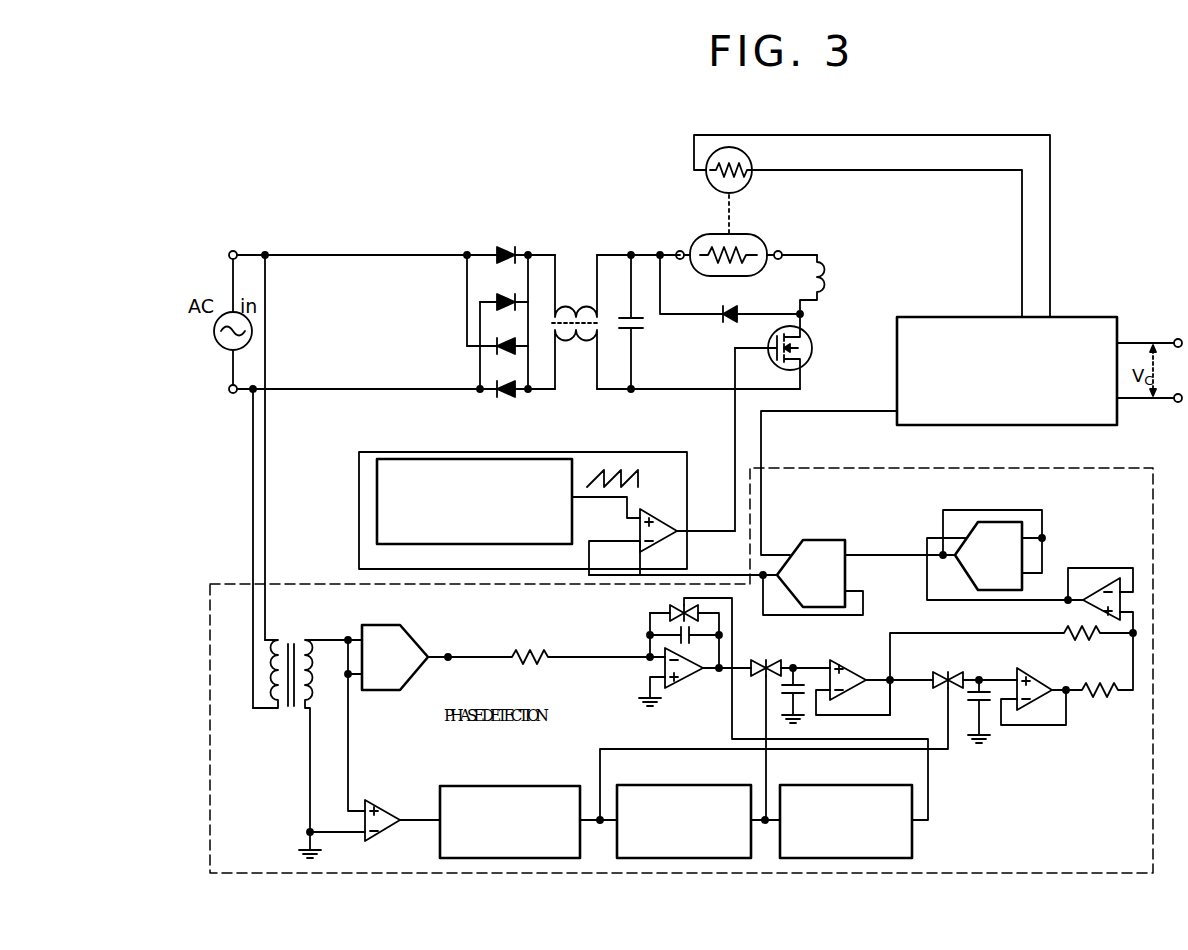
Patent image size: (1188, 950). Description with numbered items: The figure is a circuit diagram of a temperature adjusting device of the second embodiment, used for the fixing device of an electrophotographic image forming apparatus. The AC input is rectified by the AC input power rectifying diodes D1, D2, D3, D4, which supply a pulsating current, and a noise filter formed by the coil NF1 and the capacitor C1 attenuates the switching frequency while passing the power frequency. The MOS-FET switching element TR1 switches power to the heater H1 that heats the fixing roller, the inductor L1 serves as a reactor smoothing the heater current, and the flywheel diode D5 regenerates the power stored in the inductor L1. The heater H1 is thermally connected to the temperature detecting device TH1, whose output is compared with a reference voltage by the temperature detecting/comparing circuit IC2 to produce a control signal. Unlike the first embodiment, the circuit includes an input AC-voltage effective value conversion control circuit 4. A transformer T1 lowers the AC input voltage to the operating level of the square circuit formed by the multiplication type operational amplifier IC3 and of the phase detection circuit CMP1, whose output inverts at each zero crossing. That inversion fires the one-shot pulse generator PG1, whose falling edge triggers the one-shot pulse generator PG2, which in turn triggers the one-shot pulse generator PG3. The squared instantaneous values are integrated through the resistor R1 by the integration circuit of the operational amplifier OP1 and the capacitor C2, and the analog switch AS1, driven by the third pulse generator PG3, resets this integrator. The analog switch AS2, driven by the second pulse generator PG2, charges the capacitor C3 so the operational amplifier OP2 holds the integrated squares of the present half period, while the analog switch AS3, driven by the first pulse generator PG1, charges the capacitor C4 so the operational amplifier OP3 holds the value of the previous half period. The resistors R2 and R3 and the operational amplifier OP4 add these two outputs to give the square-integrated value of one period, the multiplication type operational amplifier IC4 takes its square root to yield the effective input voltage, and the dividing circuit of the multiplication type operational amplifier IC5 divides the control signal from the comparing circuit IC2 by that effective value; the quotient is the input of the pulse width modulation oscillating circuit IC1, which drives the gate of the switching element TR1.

The AC input power rectifying diode D1 is at (501, 247).
The AC input power rectifying diode D2 is at (504, 302).
The AC input power rectifying diode D3 is at (497, 346).
The AC input power rectifying diode D4 is at (504, 389).
The coil NF1 is at (575, 300).
The capacitor C1 is at (641, 334).
The heater H1 is at (757, 238).
The temperature detecting device TH1 is at (741, 148).
The inductor L1 is at (825, 281).
The flywheel diode D5 is at (742, 316).
The MOS-FET switching element TR1 is at (810, 348).
The temperature detecting/comparing circuit IC2 is at (1079, 317).
The PWM oscillating circuit IC1 is at (359, 463).
The input AC-voltage effective value conversion control circuit 4 is at (772, 472).
The multiplication type operational amplifier (dividing circuit) IC5 is at (786, 540).
The multiplication type operational amplifier (square root circuit) IC4 is at (974, 528).
The operational amplifier OP4 is at (1104, 578).
The resistor R2 is at (1062, 633).
The resistor R3 is at (1094, 698).
The operational amplifier OP3 is at (1048, 681).
The capacitor C4 is at (984, 684).
The analog switch device AS3 is at (948, 674).
The operational amplifier OP2 is at (849, 662).
The capacitor C3 is at (798, 682).
The analog switch device AS2 is at (765, 660).
The operational amplifier OP1 is at (690, 684).
The capacitor C2 is at (680, 632).
The analog switch AS1 is at (668, 607).
The resistor R1 is at (532, 654).
The multiplication type operational amplifier (square circuit) IC3 is at (360, 632).
The transformer T1 is at (300, 736).
The phase detection circuit CMP1 is at (380, 802).
The one-shot pulse generator PG1 is at (506, 784).
The one-shot pulse generator PG2 is at (690, 783).
The one-shot pulse generator PG3 is at (854, 783).